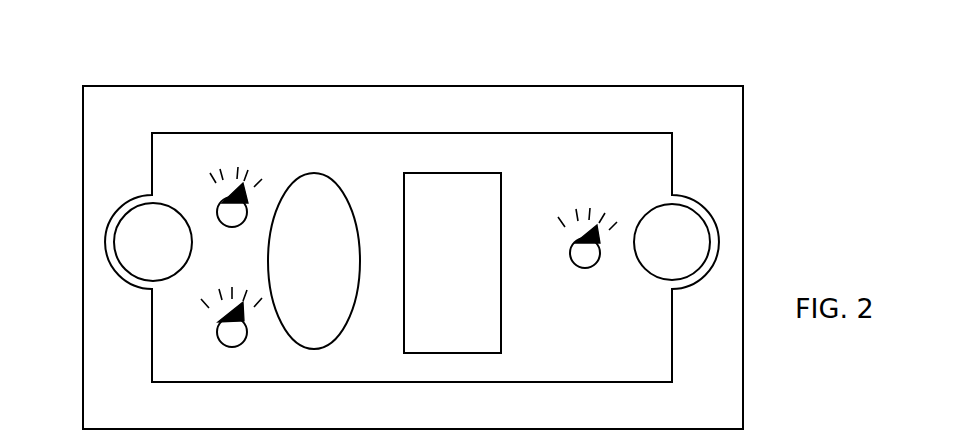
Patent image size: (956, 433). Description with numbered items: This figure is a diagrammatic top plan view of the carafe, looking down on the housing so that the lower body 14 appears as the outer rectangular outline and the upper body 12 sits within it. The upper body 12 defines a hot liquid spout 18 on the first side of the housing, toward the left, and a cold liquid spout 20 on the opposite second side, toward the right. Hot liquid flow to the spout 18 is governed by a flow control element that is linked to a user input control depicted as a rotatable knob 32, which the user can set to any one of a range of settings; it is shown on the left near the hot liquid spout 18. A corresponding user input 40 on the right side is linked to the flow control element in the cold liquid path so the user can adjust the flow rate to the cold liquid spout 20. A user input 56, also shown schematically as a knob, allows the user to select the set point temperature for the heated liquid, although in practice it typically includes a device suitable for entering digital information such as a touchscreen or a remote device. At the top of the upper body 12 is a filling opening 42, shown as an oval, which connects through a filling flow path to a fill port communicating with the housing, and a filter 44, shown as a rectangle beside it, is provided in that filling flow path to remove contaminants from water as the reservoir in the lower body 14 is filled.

The upper body 12 is at (563, 133).
The lower body 14 is at (743, 290).
The hot liquid spout 18 is at (137, 222).
The cold liquid spout 20 is at (663, 243).
The rotatable knob 32 is at (232, 340).
The user input 40 is at (588, 253).
The filling opening 42 is at (331, 228).
The filter 44 is at (431, 253).
The user input 56 is at (230, 205).